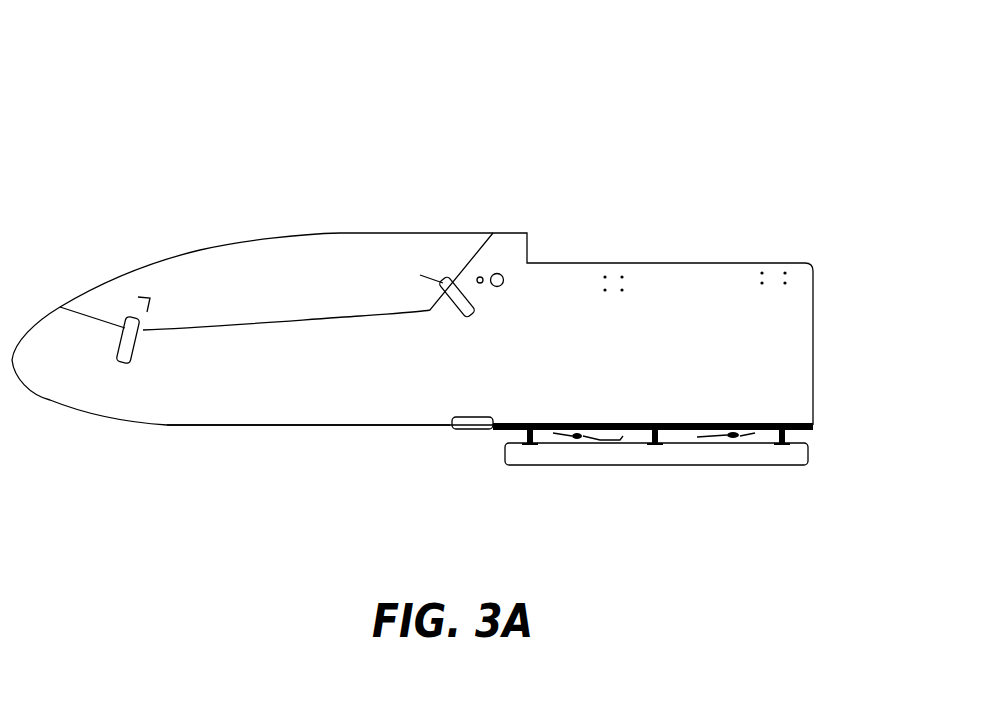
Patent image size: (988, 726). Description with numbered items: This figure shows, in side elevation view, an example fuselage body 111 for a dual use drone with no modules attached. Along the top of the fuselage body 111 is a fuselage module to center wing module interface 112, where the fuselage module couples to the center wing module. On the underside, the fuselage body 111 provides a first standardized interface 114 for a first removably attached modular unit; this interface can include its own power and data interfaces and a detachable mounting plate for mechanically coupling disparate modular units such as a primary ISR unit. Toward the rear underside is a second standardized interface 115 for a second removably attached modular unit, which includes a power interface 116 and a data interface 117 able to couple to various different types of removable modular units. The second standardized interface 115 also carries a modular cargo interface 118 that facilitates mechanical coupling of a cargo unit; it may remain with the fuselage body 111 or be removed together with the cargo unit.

The fuselage body 111 is at (125, 66).
The fuselage module to center wing module interface 112 is at (530, 240).
The first standardized interface 114 is at (178, 437).
The second standardized interface 115 is at (770, 426).
The power interface 116 is at (790, 428).
The data interface 117 is at (623, 438).
The modular cargo interface 118 is at (748, 456).